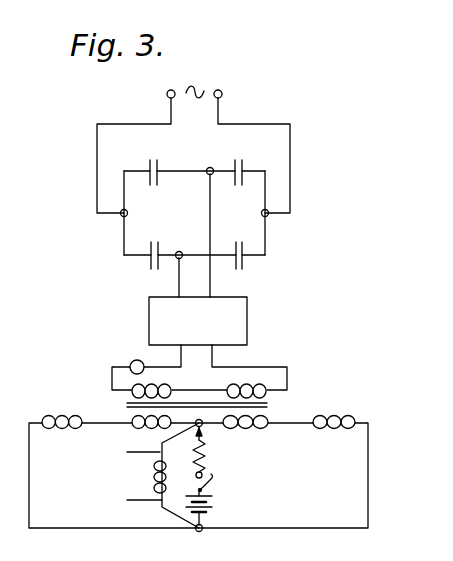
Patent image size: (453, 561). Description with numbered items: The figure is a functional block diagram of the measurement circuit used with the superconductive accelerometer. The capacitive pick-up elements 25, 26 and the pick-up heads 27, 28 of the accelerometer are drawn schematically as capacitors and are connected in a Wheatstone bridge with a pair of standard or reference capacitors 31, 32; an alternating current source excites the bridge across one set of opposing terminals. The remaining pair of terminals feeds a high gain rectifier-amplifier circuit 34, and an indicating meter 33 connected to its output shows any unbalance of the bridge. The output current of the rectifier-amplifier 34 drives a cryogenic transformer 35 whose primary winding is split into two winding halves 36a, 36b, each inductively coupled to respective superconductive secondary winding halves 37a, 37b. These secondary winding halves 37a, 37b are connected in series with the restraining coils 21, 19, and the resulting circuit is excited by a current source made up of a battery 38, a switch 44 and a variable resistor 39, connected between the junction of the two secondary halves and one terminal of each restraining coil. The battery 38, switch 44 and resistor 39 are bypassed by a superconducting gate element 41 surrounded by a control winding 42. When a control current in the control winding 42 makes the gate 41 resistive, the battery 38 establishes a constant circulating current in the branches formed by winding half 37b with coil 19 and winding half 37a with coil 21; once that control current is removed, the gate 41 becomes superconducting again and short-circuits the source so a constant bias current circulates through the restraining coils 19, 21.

The restraining coil 19 is at (340, 416).
The restraining coil 21 is at (72, 413).
The capacitive pick-up element 25 is at (246, 161).
The capacitive pick-up element 26 is at (246, 163).
The pick-up head 27 is at (246, 242).
The pick-up head 28 is at (246, 241).
The reference capacitor 31 is at (150, 163).
The reference capacitor 32 is at (151, 247).
The indicating meter 33 is at (134, 361).
The rectifier-amplifier circuit 34 is at (247, 318).
The cryogenic transformer 35 is at (310, 407).
The primary winding half 36a is at (112, 384).
The primary winding half 36b is at (254, 386).
The secondary winding half 37a is at (148, 428).
The secondary winding half 37b is at (273, 430).
The battery 38 is at (208, 503).
The variable resistor 39 is at (205, 451).
The superconducting gate element 41 is at (180, 475).
The control winding 42 is at (153, 477).
The switch 44 is at (209, 486).